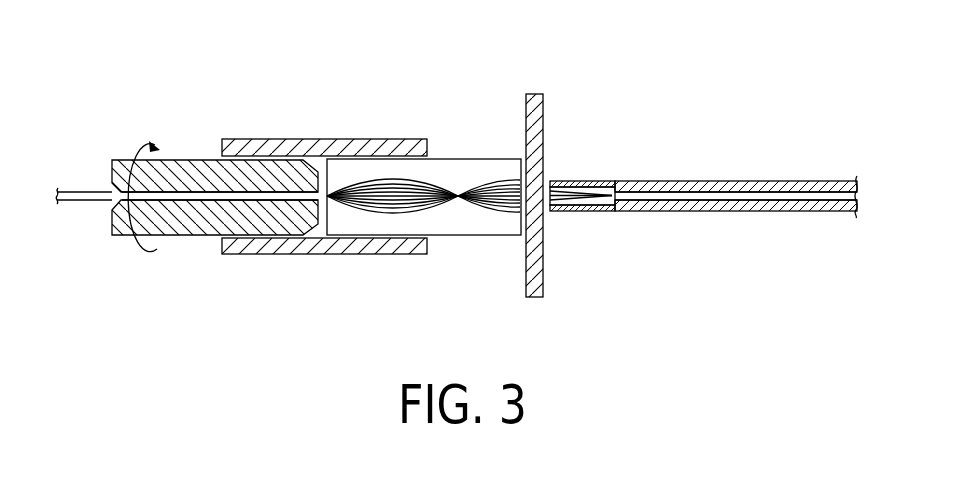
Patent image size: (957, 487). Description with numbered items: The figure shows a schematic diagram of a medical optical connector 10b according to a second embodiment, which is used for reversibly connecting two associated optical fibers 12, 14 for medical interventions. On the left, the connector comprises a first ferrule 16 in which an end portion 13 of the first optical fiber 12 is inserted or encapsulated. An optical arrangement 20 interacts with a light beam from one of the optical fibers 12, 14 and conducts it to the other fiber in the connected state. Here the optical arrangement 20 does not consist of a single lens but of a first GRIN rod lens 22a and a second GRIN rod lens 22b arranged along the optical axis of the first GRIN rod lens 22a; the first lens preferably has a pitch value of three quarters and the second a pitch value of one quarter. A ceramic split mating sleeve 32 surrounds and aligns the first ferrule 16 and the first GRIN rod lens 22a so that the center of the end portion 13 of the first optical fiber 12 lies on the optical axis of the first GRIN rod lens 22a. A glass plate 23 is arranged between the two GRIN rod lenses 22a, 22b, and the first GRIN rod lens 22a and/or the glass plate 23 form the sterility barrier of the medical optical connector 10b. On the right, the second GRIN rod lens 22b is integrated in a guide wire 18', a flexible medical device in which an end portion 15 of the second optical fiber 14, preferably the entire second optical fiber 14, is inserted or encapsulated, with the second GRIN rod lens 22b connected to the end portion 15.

The medical optical connector 10b is at (769, 70).
The first optical fiber 12 is at (80, 201).
The end portion of the first optical fiber 13 is at (188, 196).
The first ferrule 16 is at (173, 228).
The ceramic split mating sleeve 32 is at (305, 254).
The optical arrangement 20 is at (456, 140).
The first GRIN rod lens 22a is at (463, 236).
The glass plate 23 is at (537, 284).
The second GRIN rod lens 22b is at (600, 211).
The end portion of the second optical fiber 15 is at (717, 191).
The guide wire 18' is at (736, 241).
The second optical fiber 14 is at (835, 200).